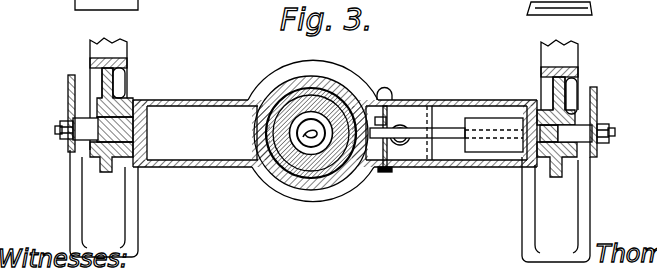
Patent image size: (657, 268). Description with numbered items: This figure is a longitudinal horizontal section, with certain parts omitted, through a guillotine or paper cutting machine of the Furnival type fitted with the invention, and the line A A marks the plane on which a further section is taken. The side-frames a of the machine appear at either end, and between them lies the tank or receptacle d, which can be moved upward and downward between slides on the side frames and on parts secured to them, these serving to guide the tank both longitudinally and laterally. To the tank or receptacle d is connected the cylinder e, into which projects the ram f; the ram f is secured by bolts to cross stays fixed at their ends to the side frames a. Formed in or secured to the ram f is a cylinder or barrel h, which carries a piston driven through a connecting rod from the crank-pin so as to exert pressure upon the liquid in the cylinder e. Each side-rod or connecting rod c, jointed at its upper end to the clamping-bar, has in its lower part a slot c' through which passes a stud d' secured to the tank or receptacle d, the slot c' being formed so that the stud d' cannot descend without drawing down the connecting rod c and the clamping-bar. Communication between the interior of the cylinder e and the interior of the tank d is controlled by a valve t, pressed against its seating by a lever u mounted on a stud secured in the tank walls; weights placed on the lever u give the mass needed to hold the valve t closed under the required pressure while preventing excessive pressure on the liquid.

The section plane line A is at (313, 33).
The side-frame a is at (330, 150).
The wheel hub slot a' is at (345, 86).
The side-rod or connecting rod c is at (329, 116).
The slot c' is at (329, 152).
The tank or receptacle d is at (335, 150).
The stud d' is at (330, 131).
The cylinder e is at (340, 97).
The ram f is at (293, 97).
The cylinder or barrel h is at (279, 172).
The valve t is at (402, 161).
The lever u is at (417, 133).